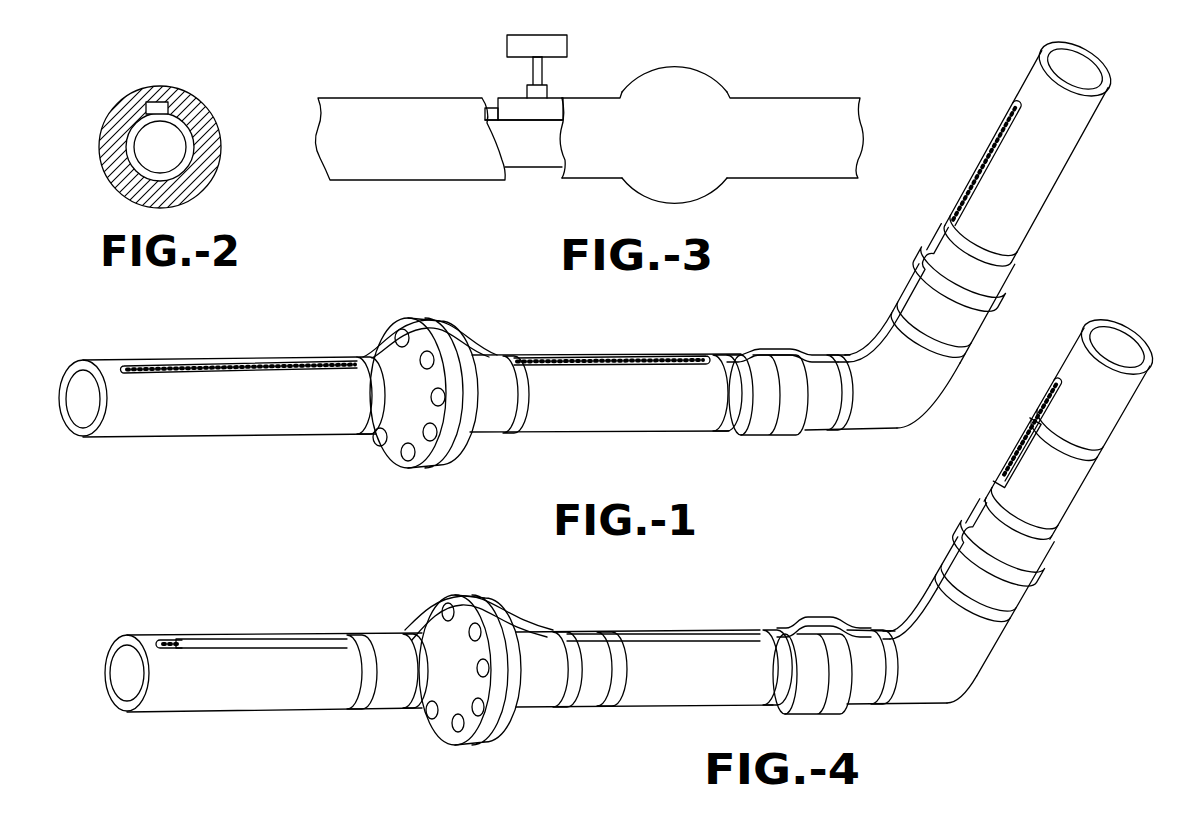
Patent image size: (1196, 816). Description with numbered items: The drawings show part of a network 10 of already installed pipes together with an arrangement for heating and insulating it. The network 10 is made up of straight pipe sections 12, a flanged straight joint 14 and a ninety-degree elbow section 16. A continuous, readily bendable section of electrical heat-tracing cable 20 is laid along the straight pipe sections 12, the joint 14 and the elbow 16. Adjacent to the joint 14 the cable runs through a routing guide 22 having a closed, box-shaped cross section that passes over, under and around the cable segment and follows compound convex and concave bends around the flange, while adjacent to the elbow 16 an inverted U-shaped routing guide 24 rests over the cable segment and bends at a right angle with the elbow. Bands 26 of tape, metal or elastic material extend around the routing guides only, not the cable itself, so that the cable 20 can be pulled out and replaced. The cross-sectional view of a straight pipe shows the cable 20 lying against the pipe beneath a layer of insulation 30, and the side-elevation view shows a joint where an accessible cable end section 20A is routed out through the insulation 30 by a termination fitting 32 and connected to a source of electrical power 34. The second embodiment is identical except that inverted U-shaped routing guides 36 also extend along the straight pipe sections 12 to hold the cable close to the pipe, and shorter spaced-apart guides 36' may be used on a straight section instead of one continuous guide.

In FIG. 1, the network 10 is at (131, 504).
In FIG. 2, the straight pipe section 12 is at (112, 154).
In FIG. 3, the straight pipe section 12 is at (520, 172).
In FIG. 1, the straight pipe section 12 is at (153, 420).
In FIG. 4, the straight pipe section 12 is at (195, 700).
In FIG. 1, the straight joint 14 is at (460, 445).
In FIG. 4, the straight joint 14 is at (470, 670).
In FIG. 1, the elbow section 16 is at (866, 410).
In FIG. 4, the elbow section 16 is at (954, 683).
In FIG. 2, the electrical heat-tracing cable 20 is at (196, 97).
In FIG. 3, the electrical heat-tracing cable 20 is at (491, 108).
In FIG. 1, the electrical heat-tracing cable 20 is at (290, 370).
In FIG. 4, the electrical heat-tracing cable 20 is at (170, 652).
In FIG. 3, the accessible cable end section 20A is at (532, 66).
In FIG. 1, the routing guide 22 is at (383, 345).
In FIG. 4, the routing guide 22 is at (513, 600).
In FIG. 1, the routing guide 24 is at (862, 345).
In FIG. 4, the routing guide 24 is at (918, 623).
In FIG. 1, the bands 26 is at (368, 432).
In FIG. 4, the bands 26 is at (350, 702).
In FIG. 2, the insulation layer 30 is at (161, 93).
In FIG. 3, the insulation layer 30 is at (700, 185).
In FIG. 3, the termination fitting 32 is at (560, 96).
In FIG. 3, the source of electrical power 34 is at (568, 42).
In FIG. 4, the routing guide 36 is at (468, 668).
In FIG. 4, the routing guide 36' is at (1012, 431).